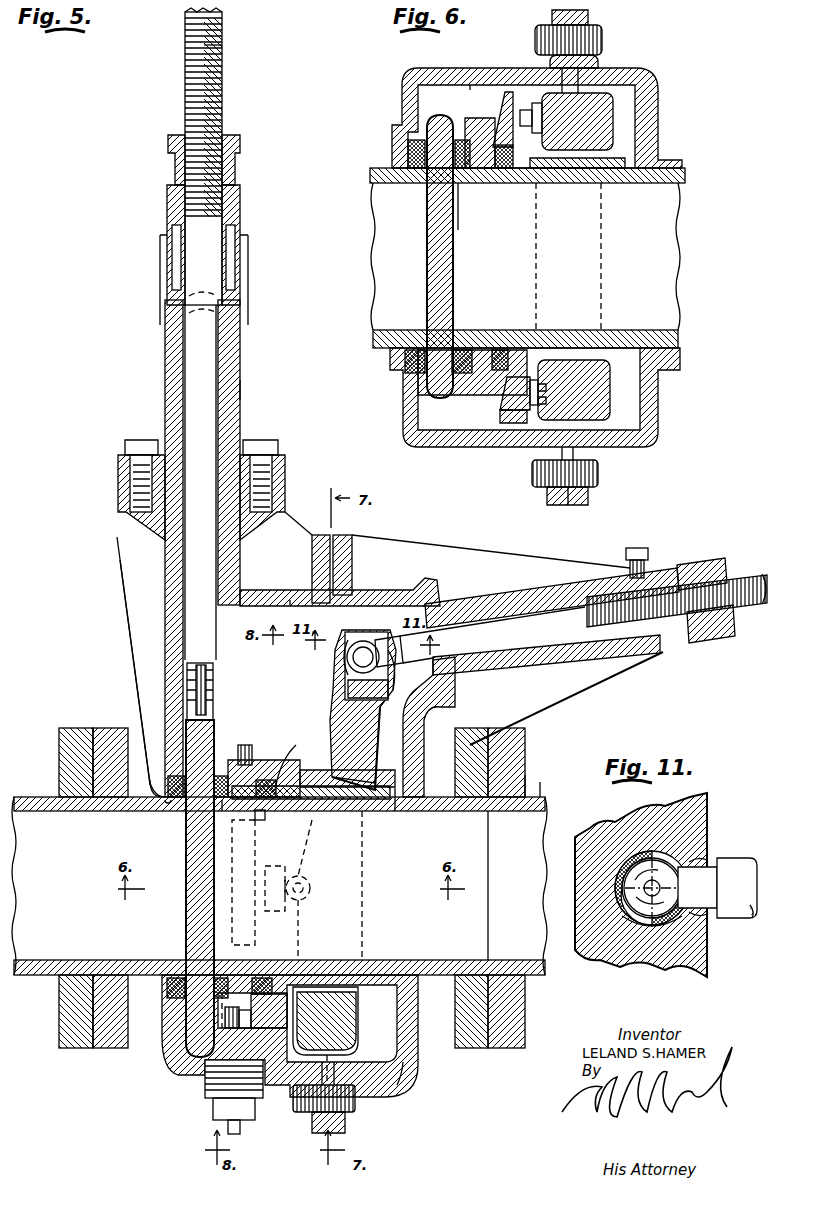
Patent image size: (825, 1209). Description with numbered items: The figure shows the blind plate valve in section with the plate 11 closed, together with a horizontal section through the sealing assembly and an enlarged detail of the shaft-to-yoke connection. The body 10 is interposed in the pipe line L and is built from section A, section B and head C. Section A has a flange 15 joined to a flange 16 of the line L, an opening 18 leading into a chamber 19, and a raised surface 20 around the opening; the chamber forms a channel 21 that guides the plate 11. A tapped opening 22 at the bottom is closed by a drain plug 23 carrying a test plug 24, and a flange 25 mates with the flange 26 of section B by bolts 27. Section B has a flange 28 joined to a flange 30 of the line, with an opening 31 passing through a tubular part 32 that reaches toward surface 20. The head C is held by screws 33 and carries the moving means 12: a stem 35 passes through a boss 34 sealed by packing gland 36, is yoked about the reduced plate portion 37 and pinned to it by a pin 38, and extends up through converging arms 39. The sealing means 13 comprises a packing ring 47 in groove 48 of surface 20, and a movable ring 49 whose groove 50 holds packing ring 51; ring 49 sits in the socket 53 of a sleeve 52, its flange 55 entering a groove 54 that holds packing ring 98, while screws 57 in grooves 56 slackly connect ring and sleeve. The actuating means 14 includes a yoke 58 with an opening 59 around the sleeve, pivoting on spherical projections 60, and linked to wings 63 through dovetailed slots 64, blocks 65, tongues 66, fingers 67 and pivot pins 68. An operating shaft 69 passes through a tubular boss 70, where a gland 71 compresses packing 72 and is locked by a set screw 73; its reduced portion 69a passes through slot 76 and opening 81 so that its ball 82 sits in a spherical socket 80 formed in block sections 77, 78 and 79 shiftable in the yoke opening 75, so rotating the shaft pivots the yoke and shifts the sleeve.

In FIG. 5, the body 10 is at (122, 653).
In FIG. 6, the body 10 is at (397, 100).
In FIG. 5, the plate 11 is at (178, 915).
In FIG. 6, the plate 11 is at (420, 224).
In FIG. 5, the means for moving the plate 12 is at (230, 66).
In FIG. 5, the sealing means 13 is at (284, 742).
In FIG. 6, the sealing means 13 is at (478, 462).
In FIG. 5, the means for actuating and controlling the sealing means 14 is at (736, 566).
In FIG. 6, the means for actuating and controlling the sealing means 14 is at (618, 398).
In FIG. 11, the means for actuating and controlling the sealing means 14 is at (713, 809).
In FIG. 5, the flange 15 is at (113, 1048).
In FIG. 5, the flange of the line 16 is at (78, 1048).
In FIG. 5, the opening 18 is at (147, 795).
In FIG. 6, the opening 18 is at (370, 180).
In FIG. 5, the chamber 19 is at (273, 600).
In FIG. 6, the chamber 19 is at (472, 85).
In FIG. 5, the raised seat or surface 20 is at (183, 822).
In FIG. 6, the raised seat or surface 20 is at (427, 335).
In FIG. 5, the channel 21 is at (165, 587).
In FIG. 5, the tapped opening 22 is at (205, 1085).
In FIG. 5, the drain plug 23 is at (258, 1106).
In FIG. 5, the test plug 24 is at (240, 1130).
In FIG. 5, the flange 25 is at (318, 535).
In FIG. 6, the flange 25 is at (547, 498).
In FIG. 5, the flange 26 is at (348, 556).
In FIG. 6, the flange 26 is at (588, 497).
In FIG. 5, the bolts 27 is at (355, 1112).
In FIG. 6, the bolts 27 is at (598, 472).
In FIG. 5, the flange 28 is at (470, 1048).
In FIG. 5, the flange of the line 30 is at (505, 1048).
In FIG. 5, the opening 31 is at (279, 886).
In FIG. 6, the opening 31 is at (680, 333).
In FIG. 5, the part 32 is at (395, 812).
In FIG. 6, the part 32 is at (572, 183).
In FIG. 5, the screws 33 is at (278, 450).
In FIG. 5, the boss 34 is at (243, 225).
In FIG. 5, the stem 35 is at (215, 48).
In FIG. 5, the packing gland 36 is at (240, 203).
In FIG. 5, the stem key 37 is at (208, 682).
In FIG. 5, the pin 38 is at (208, 700).
In FIG. 5, the arms 39 is at (222, 18).
In FIG. 5, the ring of packing material 47 is at (176, 980).
In FIG. 6, the ring of packing material 47 is at (408, 152).
In FIG. 5, the annular groove 48 is at (165, 1012).
In FIG. 6, the annular groove 48 is at (404, 365).
In FIG. 5, the ring 49 is at (260, 820).
In FIG. 6, the ring 49 is at (470, 348).
In FIG. 5, the annular groove 50 is at (228, 990).
In FIG. 5, the ring of packing material 51 is at (244, 815).
In FIG. 5, the sleeve 52 is at (336, 812).
In FIG. 6, the sleeve 52 is at (616, 175).
In FIG. 5, the annular socket 53 is at (255, 760).
In FIG. 6, the annular socket 53 is at (480, 130).
In FIG. 5, the groove 54 is at (280, 790).
In FIG. 6, the groove 54 is at (502, 348).
In FIG. 5, the annular flange 55 is at (272, 1030).
In FIG. 6, the annular flange 55 is at (483, 183).
In FIG. 5, the grooves 56 is at (228, 1030).
In FIG. 5, the screws 57 is at (246, 1028).
In FIG. 5, the yoke 58 is at (365, 750).
In FIG. 6, the yoke 58 is at (600, 112).
In FIG. 11, the yoke 58 is at (695, 950).
In FIG. 5, the opening 59 is at (376, 790).
In FIG. 6, the opening 59 is at (615, 160).
In FIG. 5, the spherical projections 60 is at (358, 1045).
In FIG. 6, the wings 63 is at (530, 105).
In FIG. 5, the dovetailed slots 64 is at (268, 888).
In FIG. 6, the dovetailed slots 64 is at (522, 378).
In FIG. 5, the blocks 65 is at (275, 897).
In FIG. 6, the blocks 65 is at (500, 400).
In FIG. 6, the tongues 66 is at (547, 389).
In FIG. 6, the fingers 67 is at (520, 428).
In FIG. 5, the pivot pins 68 is at (305, 888).
In FIG. 6, the pivot pins 68 is at (547, 400).
In FIG. 5, the operating shaft 69 is at (546, 644).
In FIG. 11, the reduced portion 69a is at (705, 890).
In FIG. 5, the tubular boss 70 is at (592, 662).
In FIG. 5, the gland 71 is at (700, 642).
In FIG. 5, the packing 72 is at (457, 612).
In FIG. 5, the set screw 73 is at (640, 560).
In FIG. 5, the opening 75 is at (340, 700).
In FIG. 11, the opening 75 is at (616, 880).
In FIG. 5, the slot 76 is at (398, 680).
In FIG. 5, the inner block section 77 is at (340, 688).
In FIG. 11, the inner block section 77 is at (620, 905).
In FIG. 11, the block section 78 is at (683, 848).
In FIG. 11, the block section 79 is at (672, 920).
In FIG. 11, the spherical socket 80 is at (630, 892).
In FIG. 5, the opening 81 is at (410, 650).
In FIG. 11, the opening 81 is at (705, 862).
In FIG. 5, the ball 82 is at (363, 647).
In FIG. 11, the ball 82 is at (643, 870).
In FIG. 5, the ring of packing material 98 is at (270, 975).
In FIG. 6, the ring of packing material 98 is at (508, 183).
In FIG. 5, the body section A is at (120, 622).
In FIG. 6, the body section A is at (468, 447).
In FIG. 5, the body section B is at (400, 1090).
In FIG. 6, the body section B is at (640, 447).
In FIG. 5, the head C is at (242, 380).
In FIG. 5, the pipe line L is at (28, 797).